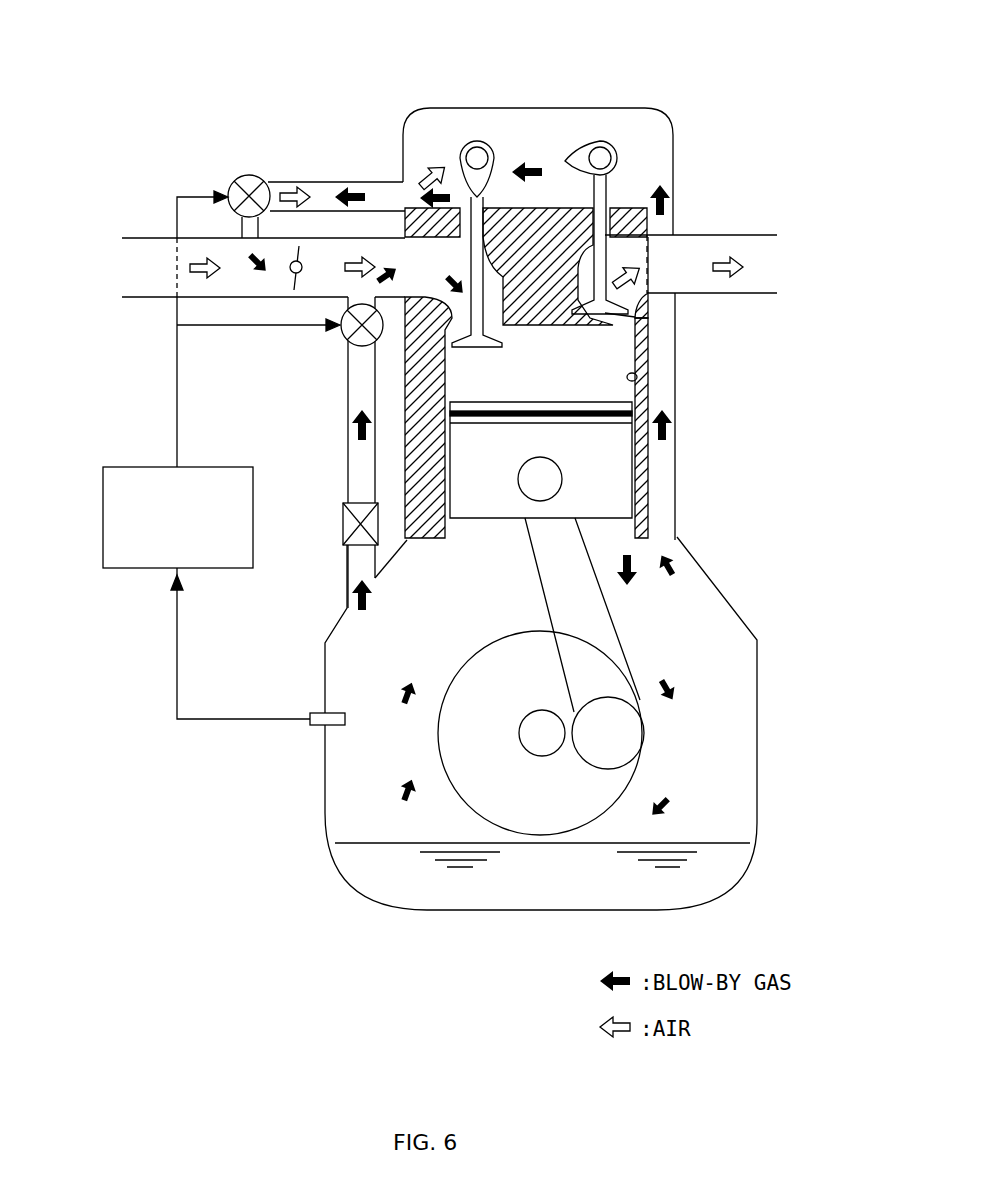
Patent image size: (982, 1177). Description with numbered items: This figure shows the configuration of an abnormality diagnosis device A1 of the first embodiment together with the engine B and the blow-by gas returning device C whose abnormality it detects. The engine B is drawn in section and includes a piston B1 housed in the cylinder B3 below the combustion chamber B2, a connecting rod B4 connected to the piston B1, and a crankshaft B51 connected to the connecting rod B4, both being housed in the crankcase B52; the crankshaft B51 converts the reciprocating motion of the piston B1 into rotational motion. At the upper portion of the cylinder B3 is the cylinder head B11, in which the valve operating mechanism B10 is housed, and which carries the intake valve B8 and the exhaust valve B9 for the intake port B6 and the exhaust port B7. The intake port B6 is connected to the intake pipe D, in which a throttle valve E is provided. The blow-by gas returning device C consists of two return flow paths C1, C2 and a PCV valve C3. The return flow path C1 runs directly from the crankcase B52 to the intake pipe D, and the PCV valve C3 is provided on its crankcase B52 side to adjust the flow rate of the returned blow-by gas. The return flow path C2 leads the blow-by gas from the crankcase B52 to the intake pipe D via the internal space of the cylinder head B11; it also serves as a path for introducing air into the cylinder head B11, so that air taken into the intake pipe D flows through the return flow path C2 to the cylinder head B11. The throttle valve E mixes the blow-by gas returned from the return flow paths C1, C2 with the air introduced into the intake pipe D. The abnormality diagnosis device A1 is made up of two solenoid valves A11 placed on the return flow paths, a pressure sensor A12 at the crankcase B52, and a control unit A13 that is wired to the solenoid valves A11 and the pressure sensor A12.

The abnormality diagnosis device A1 is at (130, 394).
The solenoid valve A11 is at (246, 176).
The pressure sensor A12 is at (320, 727).
The control unit A13 is at (137, 570).
The engine B is at (752, 460).
The piston B1 is at (637, 478).
The combustion chamber B2 is at (640, 375).
The cylinder B3 is at (632, 208).
The connecting rod B4 is at (600, 627).
The crankshaft B51 is at (585, 802).
The crankcase B52 is at (757, 736).
The intake port B6 is at (458, 245).
The exhaust port B7 is at (665, 233).
The intake valve B8 is at (487, 346).
The exhaust valve B9 is at (640, 318).
The valve operating mechanism B10 is at (597, 141).
The cylinder head B11 is at (524, 108).
The blow-by gas returning device C is at (287, 120).
The return flow path C1 is at (348, 408).
The return flow path C2 is at (322, 181).
The PCV valve C3 is at (343, 533).
The intake pipe D is at (230, 300).
The throttle valve E is at (302, 243).